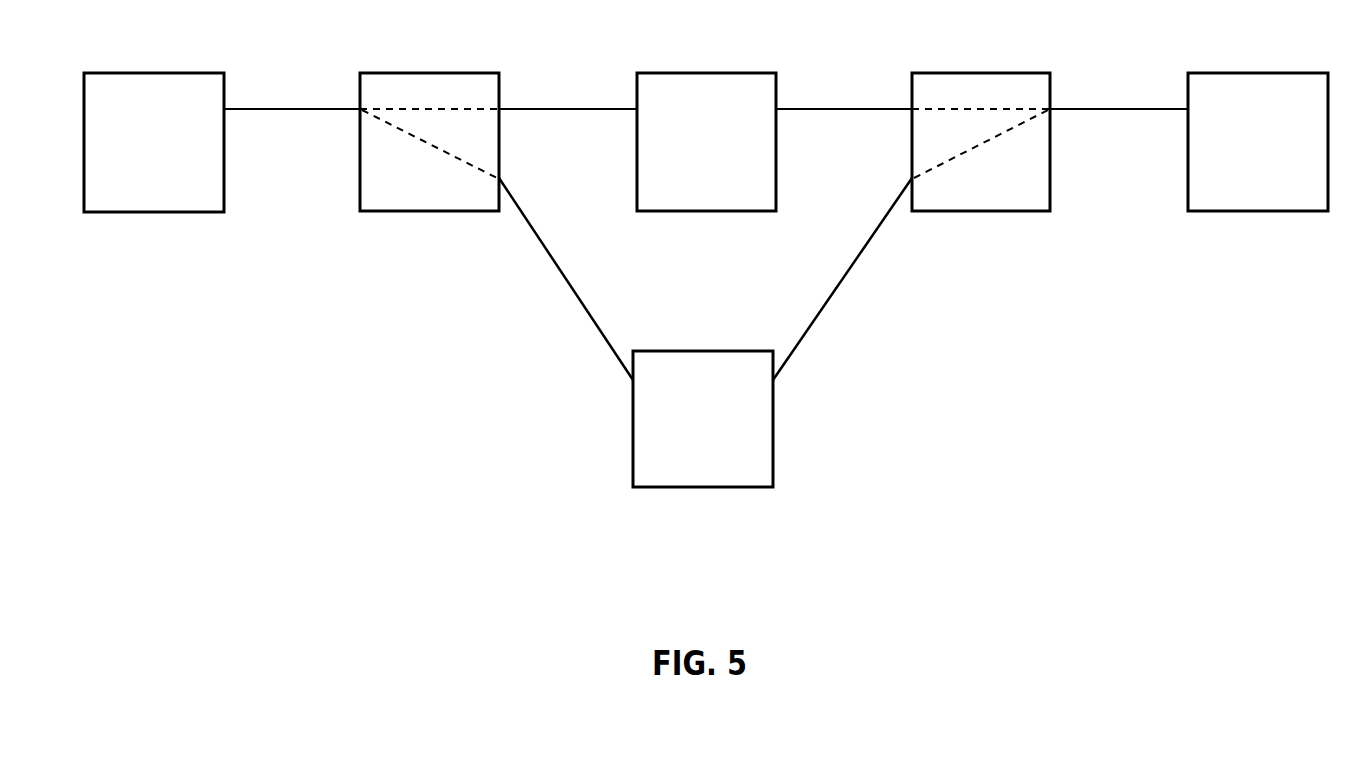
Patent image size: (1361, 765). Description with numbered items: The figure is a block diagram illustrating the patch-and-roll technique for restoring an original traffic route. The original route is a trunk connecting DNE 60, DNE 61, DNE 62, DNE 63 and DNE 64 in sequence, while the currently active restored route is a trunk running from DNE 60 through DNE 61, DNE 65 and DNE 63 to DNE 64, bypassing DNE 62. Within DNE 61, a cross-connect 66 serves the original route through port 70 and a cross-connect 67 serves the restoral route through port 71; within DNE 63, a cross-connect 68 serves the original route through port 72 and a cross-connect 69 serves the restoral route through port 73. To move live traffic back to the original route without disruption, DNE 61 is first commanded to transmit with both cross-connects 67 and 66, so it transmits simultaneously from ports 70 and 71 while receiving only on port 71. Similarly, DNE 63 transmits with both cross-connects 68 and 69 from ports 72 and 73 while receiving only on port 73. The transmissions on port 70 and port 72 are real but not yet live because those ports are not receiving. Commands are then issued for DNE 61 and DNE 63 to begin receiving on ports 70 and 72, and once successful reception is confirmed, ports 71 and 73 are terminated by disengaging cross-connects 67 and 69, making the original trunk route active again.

The DNE 60 is at (146, 212).
The DNE 61 is at (423, 211).
The DNE 62 is at (697, 211).
The DNE 63 is at (968, 211).
The DNE 64 is at (1245, 211).
The DNE 65 is at (693, 487).
The cross-connect 66 is at (432, 107).
The cross-connect 67 is at (440, 150).
The cross-connect 68 is at (958, 108).
The cross-connect 69 is at (965, 155).
The port 70 is at (502, 107).
The port 71 is at (500, 178).
The port 72 is at (912, 108).
The port 73 is at (912, 178).